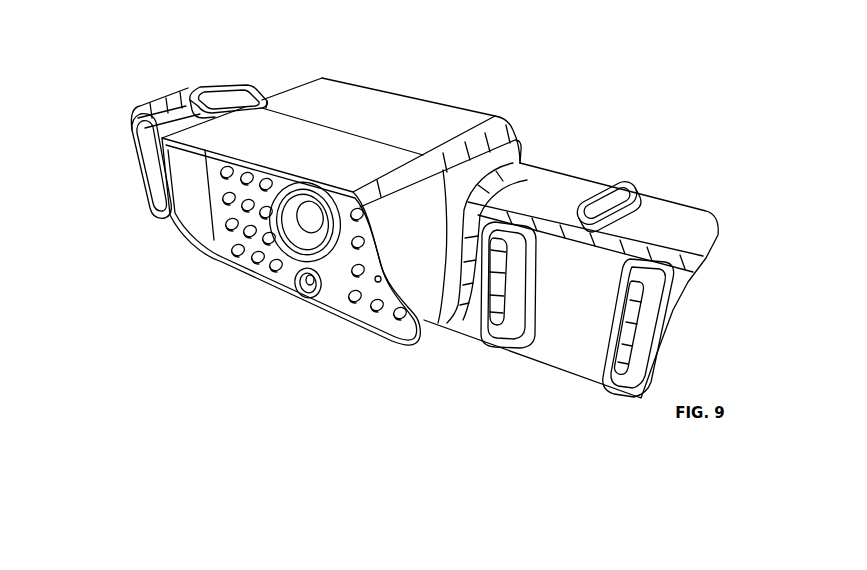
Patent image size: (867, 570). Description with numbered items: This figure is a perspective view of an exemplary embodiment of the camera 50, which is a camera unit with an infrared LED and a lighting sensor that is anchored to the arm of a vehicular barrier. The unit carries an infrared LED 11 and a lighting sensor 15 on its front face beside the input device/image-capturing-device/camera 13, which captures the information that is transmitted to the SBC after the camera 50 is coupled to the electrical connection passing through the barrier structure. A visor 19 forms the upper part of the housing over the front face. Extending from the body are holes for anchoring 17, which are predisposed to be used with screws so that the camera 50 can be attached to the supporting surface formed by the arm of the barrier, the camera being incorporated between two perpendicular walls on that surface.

The infrared LED 11 is at (242, 192).
The input device/image-capturing-device/camera 13 is at (262, 233).
The lighting sensor 15 is at (300, 285).
The holes for anchoring 17 is at (600, 183).
The visor 19 is at (248, 127).
The camera 50 is at (430, 127).